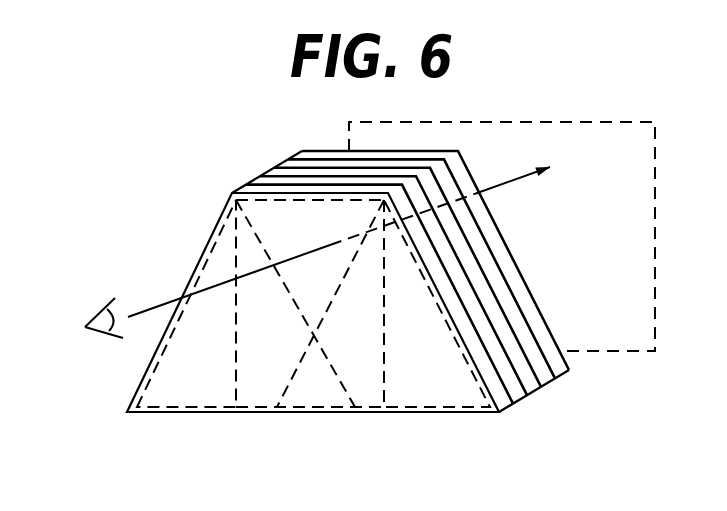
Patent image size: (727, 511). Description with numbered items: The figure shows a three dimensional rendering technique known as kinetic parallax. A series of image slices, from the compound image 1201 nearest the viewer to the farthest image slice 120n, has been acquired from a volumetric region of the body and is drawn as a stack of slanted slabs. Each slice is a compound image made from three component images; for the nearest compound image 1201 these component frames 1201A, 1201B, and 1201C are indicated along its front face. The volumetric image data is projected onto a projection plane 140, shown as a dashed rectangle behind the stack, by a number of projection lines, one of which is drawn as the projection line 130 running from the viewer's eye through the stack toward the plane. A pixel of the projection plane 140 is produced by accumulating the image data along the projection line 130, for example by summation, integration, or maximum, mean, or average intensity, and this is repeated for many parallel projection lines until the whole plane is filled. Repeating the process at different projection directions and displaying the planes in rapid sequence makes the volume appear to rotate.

The compound image 1201 is at (483, 409).
The image slice 120n is at (567, 371).
The component frame 1201A is at (193, 390).
The component frame 1201B is at (310, 390).
The component frame 1201C is at (422, 390).
The projection line 130 is at (172, 302).
The projection plane 140 is at (628, 132).